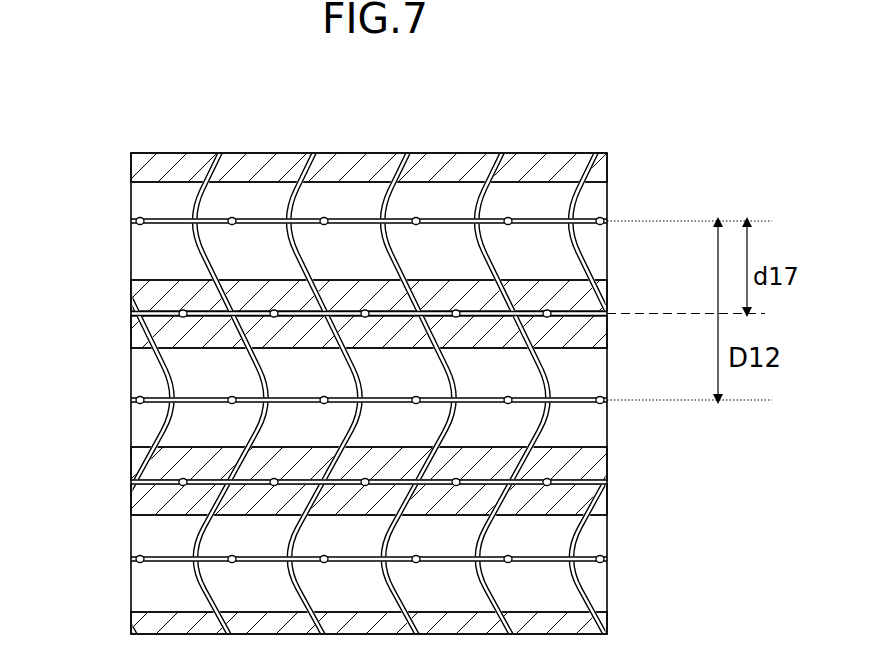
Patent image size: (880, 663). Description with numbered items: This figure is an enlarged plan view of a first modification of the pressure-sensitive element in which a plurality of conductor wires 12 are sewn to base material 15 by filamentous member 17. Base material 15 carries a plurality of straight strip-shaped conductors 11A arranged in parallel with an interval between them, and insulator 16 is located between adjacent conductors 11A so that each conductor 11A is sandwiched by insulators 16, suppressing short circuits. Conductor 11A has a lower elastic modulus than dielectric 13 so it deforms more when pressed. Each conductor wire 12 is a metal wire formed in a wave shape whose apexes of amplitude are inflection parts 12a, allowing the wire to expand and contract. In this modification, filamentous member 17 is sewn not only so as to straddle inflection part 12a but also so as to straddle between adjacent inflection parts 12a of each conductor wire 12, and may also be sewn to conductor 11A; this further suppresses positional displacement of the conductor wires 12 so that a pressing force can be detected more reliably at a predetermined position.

The conductor 11A is at (607, 171).
The conductor wire 12 is at (422, 352).
The inflection part 12a is at (178, 226).
The dielectric 13 is at (217, 153).
The base material 15 is at (143, 196).
The insulator 16 is at (603, 244).
The filamentous member 17 is at (131, 221).